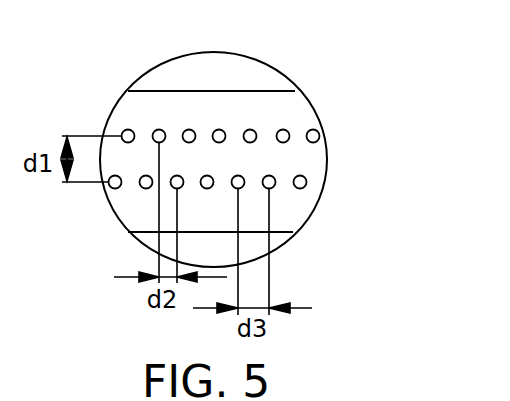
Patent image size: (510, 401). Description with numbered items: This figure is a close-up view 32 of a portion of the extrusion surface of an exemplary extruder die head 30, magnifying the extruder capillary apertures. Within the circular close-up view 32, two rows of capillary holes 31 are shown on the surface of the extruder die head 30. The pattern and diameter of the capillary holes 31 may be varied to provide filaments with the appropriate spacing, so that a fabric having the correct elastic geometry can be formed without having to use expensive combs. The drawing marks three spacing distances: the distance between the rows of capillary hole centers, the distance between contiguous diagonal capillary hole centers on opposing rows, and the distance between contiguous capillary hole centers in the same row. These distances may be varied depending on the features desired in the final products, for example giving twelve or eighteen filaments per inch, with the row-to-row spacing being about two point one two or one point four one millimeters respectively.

The extruder die head 30 is at (133, 116).
The capillary holes 31 is at (289, 132).
The close-up view 32 is at (277, 70).